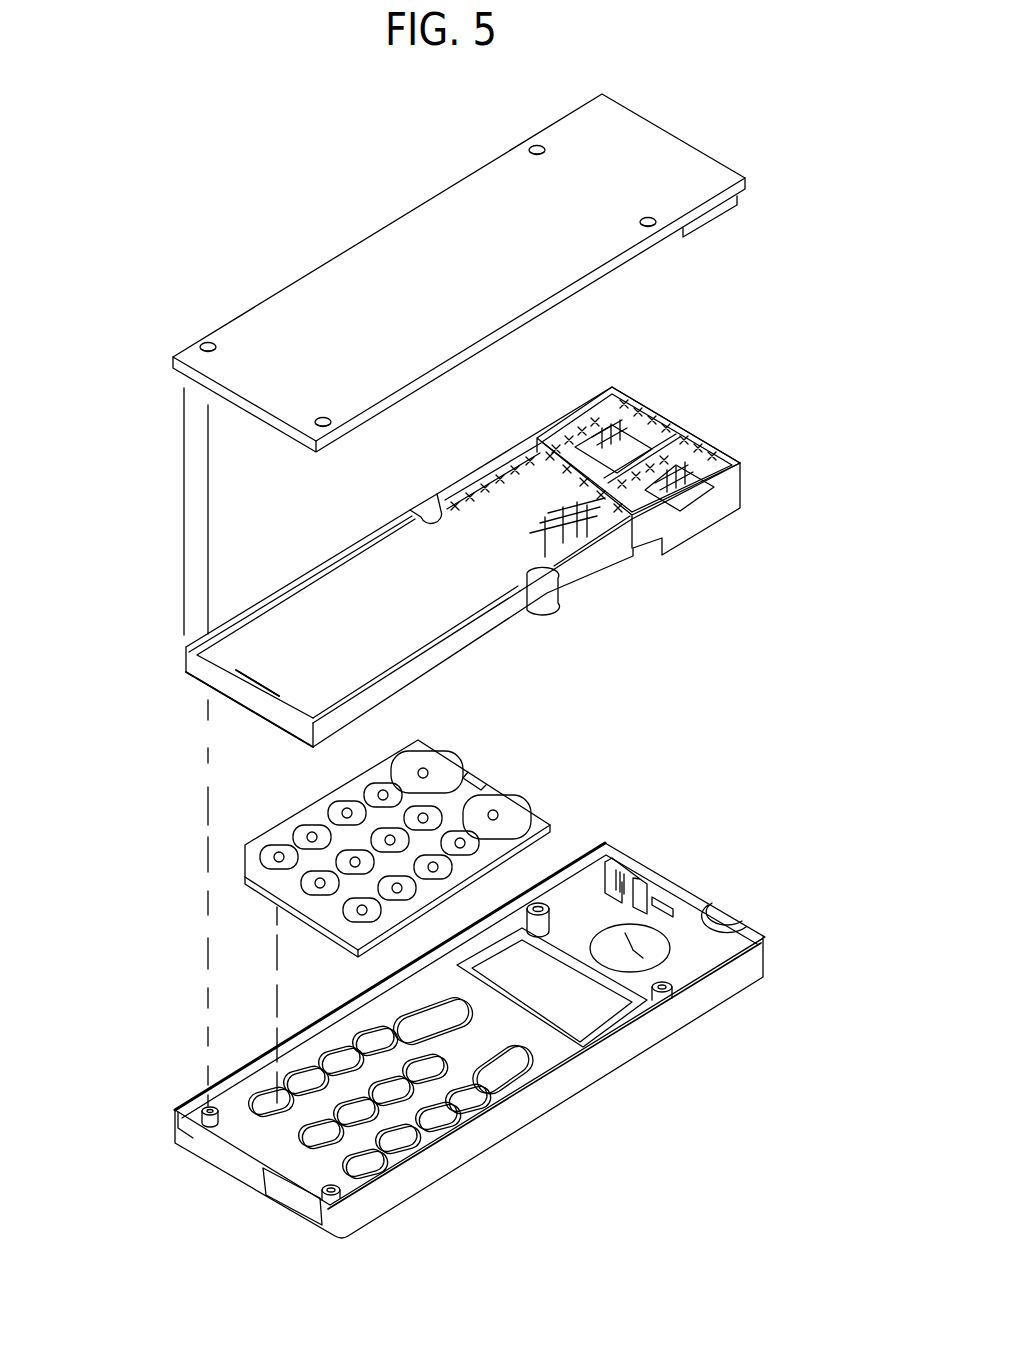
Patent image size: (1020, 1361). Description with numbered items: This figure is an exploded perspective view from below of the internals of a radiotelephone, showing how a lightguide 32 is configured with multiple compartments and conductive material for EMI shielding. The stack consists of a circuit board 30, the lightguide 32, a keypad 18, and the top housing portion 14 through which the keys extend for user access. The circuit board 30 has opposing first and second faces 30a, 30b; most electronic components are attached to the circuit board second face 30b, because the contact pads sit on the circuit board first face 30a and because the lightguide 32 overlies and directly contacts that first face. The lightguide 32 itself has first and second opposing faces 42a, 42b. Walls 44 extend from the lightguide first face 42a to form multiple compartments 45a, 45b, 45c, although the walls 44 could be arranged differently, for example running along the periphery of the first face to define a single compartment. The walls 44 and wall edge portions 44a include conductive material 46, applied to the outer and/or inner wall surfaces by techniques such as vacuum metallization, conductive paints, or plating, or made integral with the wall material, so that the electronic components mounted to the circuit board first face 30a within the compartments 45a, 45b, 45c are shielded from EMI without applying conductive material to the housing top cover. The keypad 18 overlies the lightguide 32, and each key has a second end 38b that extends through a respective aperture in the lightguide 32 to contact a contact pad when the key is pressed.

The top housing portion 14 is at (763, 965).
The keypad 18 is at (447, 828).
The circuit board 30 is at (416, 268).
The circuit board first face 30a is at (172, 366).
The circuit board second face 30b is at (392, 260).
The lightguide 32 is at (444, 529).
The key second end 38b is at (383, 795).
The lightguide first face 42a is at (417, 583).
The lightguide second face 42b is at (183, 670).
The walls 44 is at (667, 425).
The wall edge portions 44a is at (565, 417).
The first compartment 45a is at (247, 613).
The second compartment 45b is at (637, 395).
The third compartment 45c is at (730, 458).
The conductive material 46 is at (604, 390).